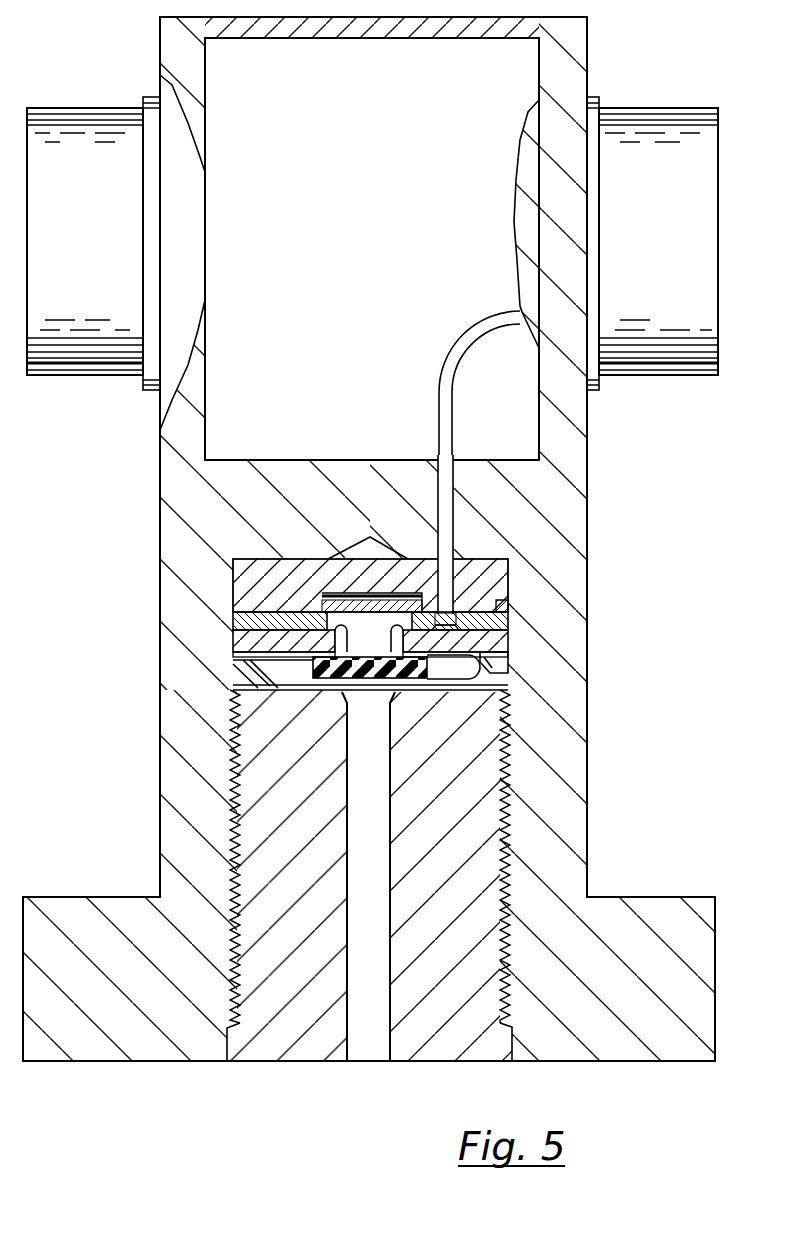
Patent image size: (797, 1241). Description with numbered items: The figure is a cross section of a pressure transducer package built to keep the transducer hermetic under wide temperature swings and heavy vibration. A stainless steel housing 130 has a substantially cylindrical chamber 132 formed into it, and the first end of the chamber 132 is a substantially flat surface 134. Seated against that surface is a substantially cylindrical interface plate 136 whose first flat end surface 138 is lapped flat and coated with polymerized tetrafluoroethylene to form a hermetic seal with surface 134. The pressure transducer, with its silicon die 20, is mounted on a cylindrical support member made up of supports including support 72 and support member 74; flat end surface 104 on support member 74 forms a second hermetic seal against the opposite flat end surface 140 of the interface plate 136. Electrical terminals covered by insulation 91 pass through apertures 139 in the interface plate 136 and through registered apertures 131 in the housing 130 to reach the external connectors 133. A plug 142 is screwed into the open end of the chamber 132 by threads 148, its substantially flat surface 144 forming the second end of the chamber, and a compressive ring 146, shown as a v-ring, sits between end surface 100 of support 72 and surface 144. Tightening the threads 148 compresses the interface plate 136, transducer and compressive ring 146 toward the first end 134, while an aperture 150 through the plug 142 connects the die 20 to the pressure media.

The die 20 is at (395, 679).
The support 72 is at (503, 645).
The support member 74 is at (240, 628).
The insulation 91 is at (439, 416).
The end surface 100 is at (505, 658).
The end surface 104 is at (240, 600).
The housing 130 is at (588, 530).
The apertures 131 is at (455, 508).
The chamber 132 is at (512, 742).
The external connectors 133 is at (80, 377).
The flat surface 134 is at (294, 558).
The interface plate 136 is at (290, 584).
The end surface 138 is at (372, 589).
The apertures 139 is at (480, 598).
The end surface 140 is at (499, 604).
The plug 142 is at (457, 904).
The flat surface 144 is at (296, 691).
The compressive ring 146 is at (235, 670).
The threads 148 is at (232, 912).
The aperture 150 is at (370, 1050).